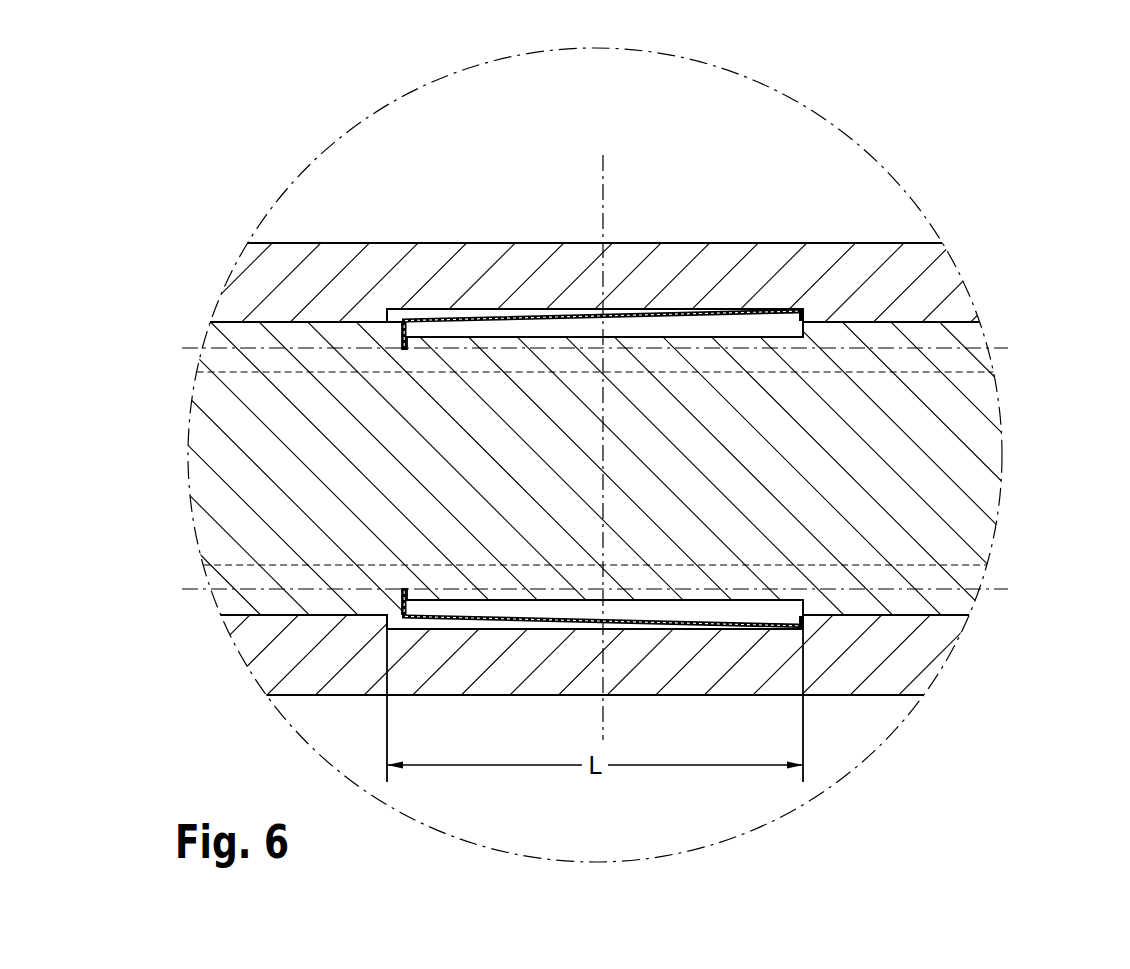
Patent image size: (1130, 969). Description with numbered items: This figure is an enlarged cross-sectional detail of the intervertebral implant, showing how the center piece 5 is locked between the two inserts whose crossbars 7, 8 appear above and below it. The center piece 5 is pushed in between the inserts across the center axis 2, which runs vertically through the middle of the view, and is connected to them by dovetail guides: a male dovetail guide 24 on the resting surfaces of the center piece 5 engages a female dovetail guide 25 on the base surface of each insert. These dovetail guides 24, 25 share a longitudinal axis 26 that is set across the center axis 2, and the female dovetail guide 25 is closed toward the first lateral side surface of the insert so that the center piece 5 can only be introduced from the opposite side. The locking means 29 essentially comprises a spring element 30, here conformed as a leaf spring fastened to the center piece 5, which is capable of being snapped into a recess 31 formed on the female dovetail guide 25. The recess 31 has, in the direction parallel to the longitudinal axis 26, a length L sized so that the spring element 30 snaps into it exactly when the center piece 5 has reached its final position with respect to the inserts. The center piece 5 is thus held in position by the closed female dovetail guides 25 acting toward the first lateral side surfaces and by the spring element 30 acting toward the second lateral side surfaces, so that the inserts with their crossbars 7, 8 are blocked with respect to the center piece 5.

The center axis 2 is at (603, 197).
The center piece 5 is at (275, 503).
The crossbar 7 is at (303, 287).
The crossbar 8 is at (906, 652).
The male dovetail guide 24 is at (262, 360).
The female dovetail guide 25 is at (272, 322).
The longitudinal axis 26 is at (993, 347).
The locking means 29 is at (799, 289).
The spring element 30 is at (557, 316).
The recess 31 is at (412, 313).